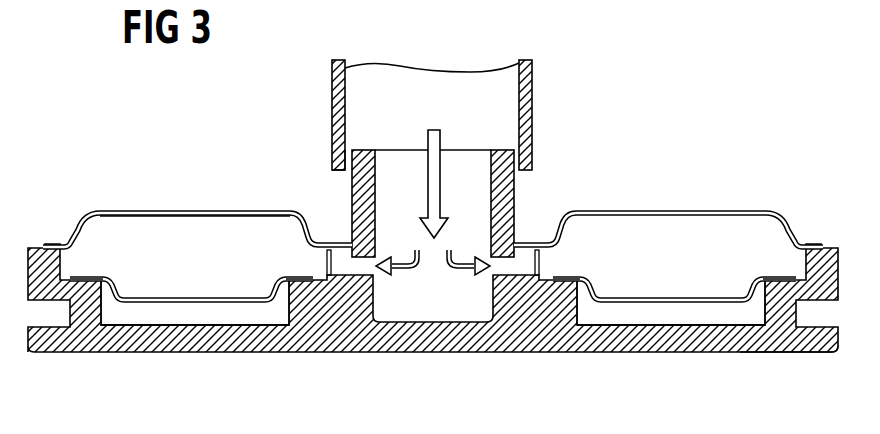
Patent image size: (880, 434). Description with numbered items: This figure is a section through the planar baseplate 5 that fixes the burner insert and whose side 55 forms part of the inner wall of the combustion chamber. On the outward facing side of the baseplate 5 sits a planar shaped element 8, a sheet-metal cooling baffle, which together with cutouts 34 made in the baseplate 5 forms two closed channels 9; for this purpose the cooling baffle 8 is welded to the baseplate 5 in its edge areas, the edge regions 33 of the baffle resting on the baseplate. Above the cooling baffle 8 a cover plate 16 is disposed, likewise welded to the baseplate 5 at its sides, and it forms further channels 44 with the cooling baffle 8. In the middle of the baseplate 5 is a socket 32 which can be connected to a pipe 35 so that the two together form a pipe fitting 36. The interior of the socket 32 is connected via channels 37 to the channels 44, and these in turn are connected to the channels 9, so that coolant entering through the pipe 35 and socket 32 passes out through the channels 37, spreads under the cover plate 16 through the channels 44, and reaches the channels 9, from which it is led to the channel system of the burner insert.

The baseplate 5 is at (722, 345).
The side of the baseplate 55 is at (778, 355).
The cutouts 34 is at (168, 340).
The channels 9 is at (226, 314).
The cover plate 16 is at (128, 207).
The channels 44 is at (207, 233).
The shaped element 8 is at (186, 296).
The edge flange 33 is at (88, 276).
The socket 32 is at (502, 197).
The pipe 35 is at (390, 92).
The pipe fitting 36 is at (333, 157).
The channels 37 is at (382, 273).